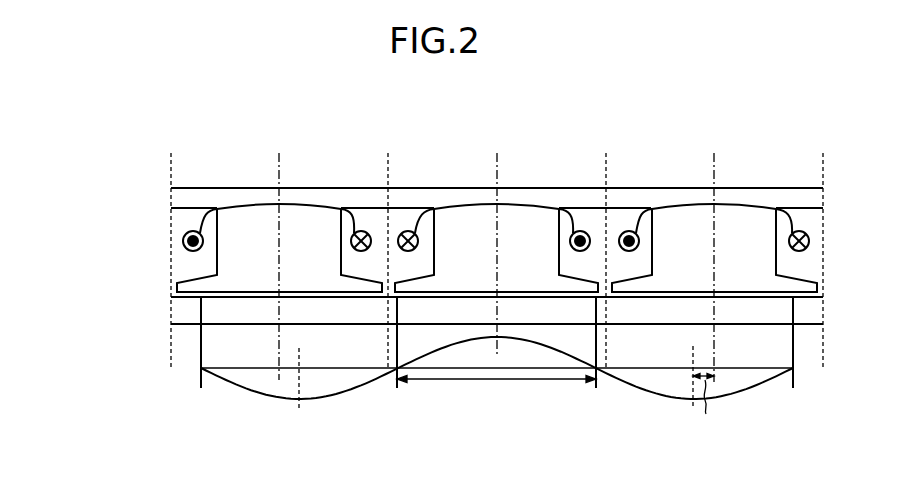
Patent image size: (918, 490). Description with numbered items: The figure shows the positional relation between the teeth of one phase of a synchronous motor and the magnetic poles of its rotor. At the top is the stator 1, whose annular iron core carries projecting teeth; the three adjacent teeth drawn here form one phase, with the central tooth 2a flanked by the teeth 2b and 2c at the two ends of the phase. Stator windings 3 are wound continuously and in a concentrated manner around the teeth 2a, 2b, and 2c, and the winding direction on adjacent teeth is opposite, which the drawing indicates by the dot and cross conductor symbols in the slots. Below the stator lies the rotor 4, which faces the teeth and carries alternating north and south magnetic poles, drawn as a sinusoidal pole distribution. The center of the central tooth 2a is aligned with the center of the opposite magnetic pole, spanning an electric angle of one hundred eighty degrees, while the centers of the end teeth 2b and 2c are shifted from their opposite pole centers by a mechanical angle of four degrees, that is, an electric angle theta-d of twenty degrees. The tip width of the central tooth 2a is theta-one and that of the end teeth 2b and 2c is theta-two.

The stator 1 is at (158, 170).
The central tooth 2a is at (388, 177).
The tooth 2b is at (388, 177).
The tooth 2c is at (823, 177).
The stator windings 3 is at (323, 207).
The rotor 4 is at (158, 298).